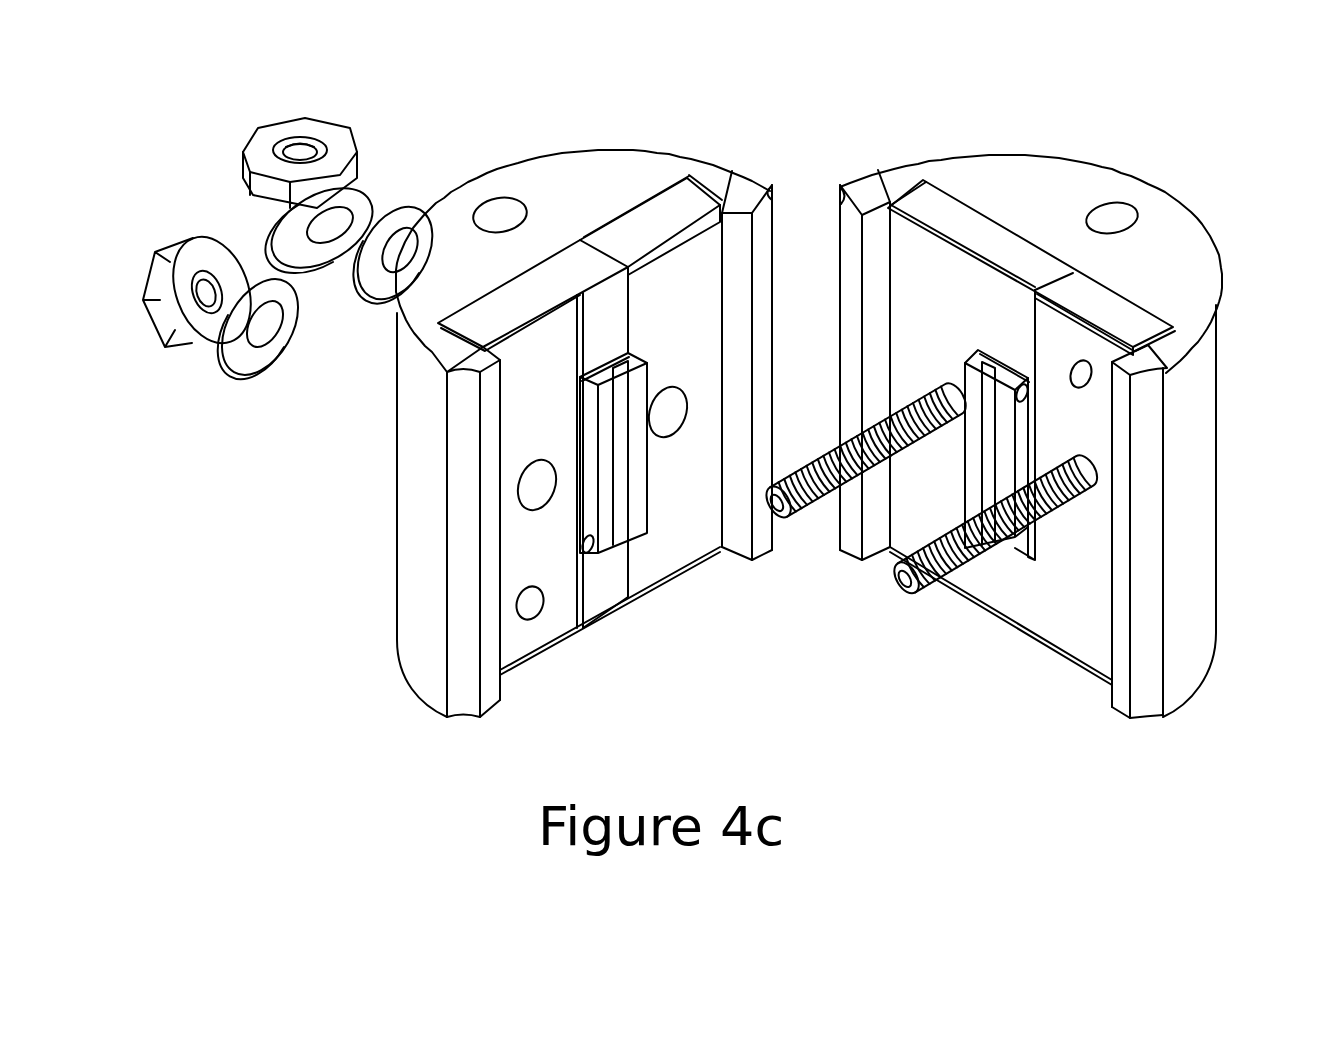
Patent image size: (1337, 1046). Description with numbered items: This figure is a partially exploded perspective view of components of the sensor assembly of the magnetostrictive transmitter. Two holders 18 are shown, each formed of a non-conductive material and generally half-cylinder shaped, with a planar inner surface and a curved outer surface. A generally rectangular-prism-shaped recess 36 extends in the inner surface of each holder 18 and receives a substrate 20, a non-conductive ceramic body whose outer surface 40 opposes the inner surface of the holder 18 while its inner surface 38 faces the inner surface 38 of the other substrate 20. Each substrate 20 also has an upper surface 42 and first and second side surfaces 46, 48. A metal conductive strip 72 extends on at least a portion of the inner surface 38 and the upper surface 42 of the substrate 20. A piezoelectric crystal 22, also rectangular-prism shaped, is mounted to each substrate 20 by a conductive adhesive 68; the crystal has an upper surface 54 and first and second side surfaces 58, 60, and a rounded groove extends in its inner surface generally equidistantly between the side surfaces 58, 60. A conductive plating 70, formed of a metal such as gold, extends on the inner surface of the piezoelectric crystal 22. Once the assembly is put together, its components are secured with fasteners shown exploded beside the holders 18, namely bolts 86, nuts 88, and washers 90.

The holder 18 is at (495, 169).
The substrate 20 is at (536, 664).
The piezoelectric crystal 22 is at (593, 566).
The recess 36 is at (562, 252).
The inner surface 38 is at (673, 545).
The outer surface 40 is at (655, 195).
The upper surface 42 is at (632, 230).
The first side surface 46 is at (498, 358).
The second side surface 48 is at (700, 195).
The upper surface 54 is at (628, 362).
The first side surface 58 is at (590, 427).
The second side surface 60 is at (1020, 440).
The conductive adhesive 68 is at (582, 355).
The conductive plating 70 is at (641, 484).
The conductive strip 72 is at (486, 309).
The bolts 86 is at (881, 592).
The nuts 88 is at (262, 219).
The washers 90 is at (356, 309).